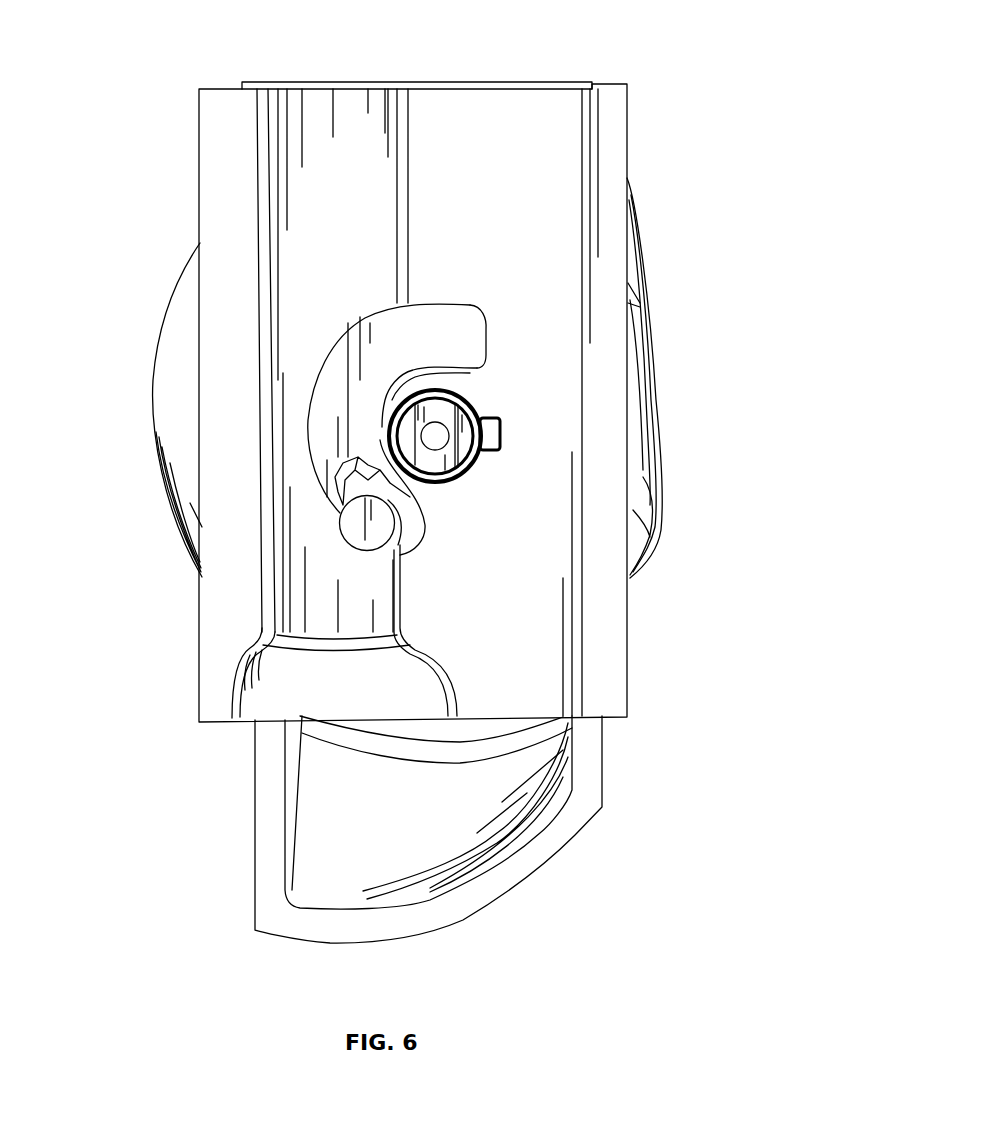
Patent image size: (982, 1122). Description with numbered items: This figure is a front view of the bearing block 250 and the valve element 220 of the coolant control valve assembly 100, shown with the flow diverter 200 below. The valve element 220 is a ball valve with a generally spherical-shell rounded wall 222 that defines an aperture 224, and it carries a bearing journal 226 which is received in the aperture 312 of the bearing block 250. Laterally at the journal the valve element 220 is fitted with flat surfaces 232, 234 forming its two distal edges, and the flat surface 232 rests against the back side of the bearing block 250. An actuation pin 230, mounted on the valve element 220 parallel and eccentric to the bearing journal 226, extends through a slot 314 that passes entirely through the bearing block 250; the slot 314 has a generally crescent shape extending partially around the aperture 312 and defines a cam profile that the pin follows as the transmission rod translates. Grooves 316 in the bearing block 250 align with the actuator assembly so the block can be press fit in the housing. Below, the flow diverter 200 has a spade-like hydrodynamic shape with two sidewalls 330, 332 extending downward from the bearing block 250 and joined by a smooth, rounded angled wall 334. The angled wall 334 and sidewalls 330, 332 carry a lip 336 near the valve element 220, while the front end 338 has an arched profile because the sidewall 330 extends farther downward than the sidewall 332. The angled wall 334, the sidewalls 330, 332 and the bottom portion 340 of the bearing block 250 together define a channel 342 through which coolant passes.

The control valve assembly 100 is at (727, 62).
The flow diverter 200 is at (585, 802).
The valve element 220 is at (175, 297).
The rounded wall 222 is at (155, 380).
The aperture 224 is at (655, 392).
The bearing journal 226 is at (460, 453).
The actuation pin 230 is at (357, 523).
The flat surface 232 is at (645, 477).
The flat surface 234 is at (643, 227).
The bearing block 250 is at (411, 361).
The aperture 312 is at (495, 427).
The slot 314 is at (417, 335).
The grooves 316 is at (347, 132).
The sidewall 330 is at (253, 868).
The sidewall 332 is at (602, 752).
The angled wall 334 is at (430, 817).
The lip 336 is at (513, 742).
The front end 338 is at (373, 930).
The bottom portion 340 is at (232, 722).
The channel 342 is at (360, 830).